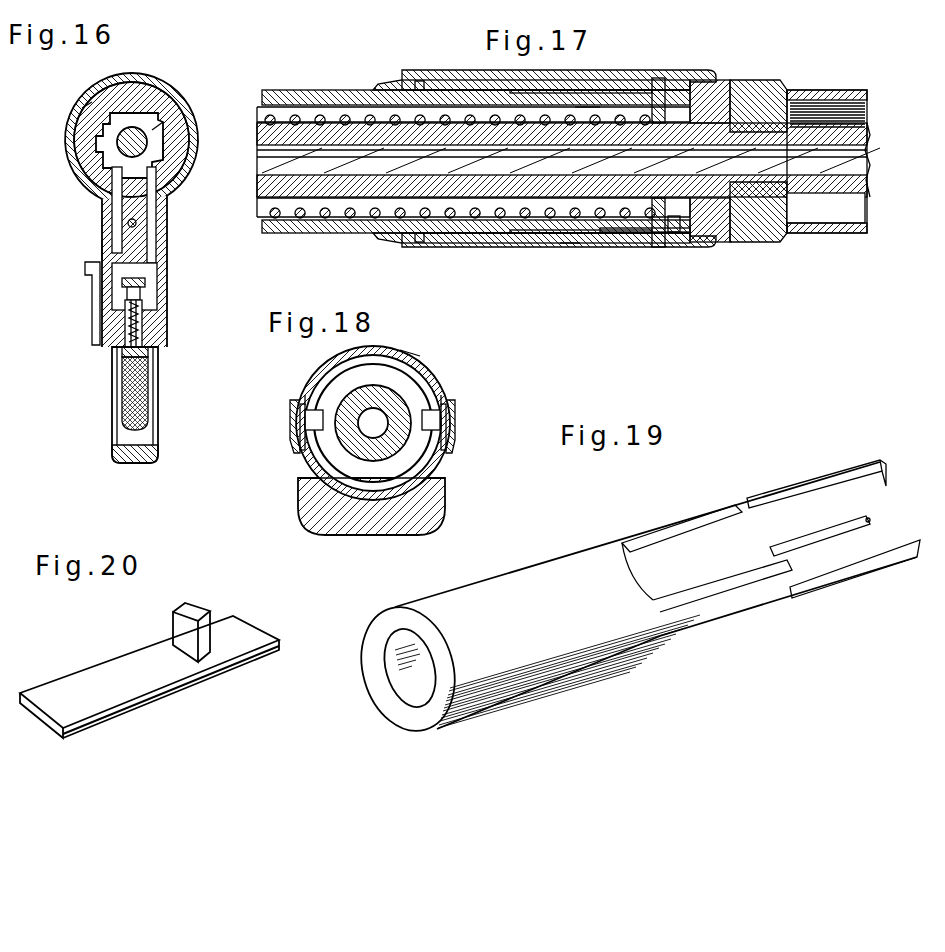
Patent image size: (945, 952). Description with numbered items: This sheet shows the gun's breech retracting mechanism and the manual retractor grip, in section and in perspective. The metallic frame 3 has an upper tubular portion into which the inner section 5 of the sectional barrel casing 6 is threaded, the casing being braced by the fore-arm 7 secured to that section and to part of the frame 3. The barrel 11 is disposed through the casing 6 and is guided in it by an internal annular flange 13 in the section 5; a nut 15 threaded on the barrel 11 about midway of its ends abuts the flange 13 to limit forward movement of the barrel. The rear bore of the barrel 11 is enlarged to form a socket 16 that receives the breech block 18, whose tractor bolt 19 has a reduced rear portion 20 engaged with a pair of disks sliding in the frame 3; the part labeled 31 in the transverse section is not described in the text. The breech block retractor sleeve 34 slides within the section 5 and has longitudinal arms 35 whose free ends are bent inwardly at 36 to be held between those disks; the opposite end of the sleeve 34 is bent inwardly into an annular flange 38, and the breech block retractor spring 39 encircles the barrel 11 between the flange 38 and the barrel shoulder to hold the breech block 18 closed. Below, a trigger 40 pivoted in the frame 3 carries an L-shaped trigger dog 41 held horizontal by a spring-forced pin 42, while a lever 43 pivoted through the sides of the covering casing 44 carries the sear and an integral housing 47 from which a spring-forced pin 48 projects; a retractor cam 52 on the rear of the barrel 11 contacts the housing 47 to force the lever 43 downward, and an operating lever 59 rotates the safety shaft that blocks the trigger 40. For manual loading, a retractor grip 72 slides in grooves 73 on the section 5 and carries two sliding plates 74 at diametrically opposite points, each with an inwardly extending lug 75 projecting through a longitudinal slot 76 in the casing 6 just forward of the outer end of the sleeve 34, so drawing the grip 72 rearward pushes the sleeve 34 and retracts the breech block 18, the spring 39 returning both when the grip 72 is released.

In FIG. 16, the frame 3 is at (160, 140).
In FIG. 17, the inner section of barrel casing 5 is at (300, 90).
In FIG. 18, the inner section of barrel casing 5 is at (430, 379).
In FIG. 17, the barrel casing 6 is at (826, 92).
In FIG. 18, the fore-arm 7 is at (326, 520).
In FIG. 16, the barrel 11 is at (78, 133).
In FIG. 17, the barrel 11 is at (862, 195).
In FIG. 18, the barrel 11 is at (352, 393).
In FIG. 17, the annular flange 13 is at (775, 243).
In FIG. 17, the nut 15 is at (737, 244).
In FIG. 16, the socket 16 is at (183, 148).
In FIG. 17, the socket 16 is at (687, 227).
In FIG. 17, the breech block 18 is at (700, 243).
In FIG. 16, the tractor bolt 19 is at (86, 108).
In FIG. 16, the reduced portion 20 is at (136, 121).
In FIG. 16, the hub pin 31 is at (141, 129).
In FIG. 17, the breech block retractor sleeve 34 is at (568, 238).
In FIG. 19, the breech block retractor sleeve 34 is at (543, 567).
In FIG. 16, the arms 35 is at (112, 76).
In FIG. 17, the arms 35 is at (340, 107).
In FIG. 19, the arms 35 is at (807, 490).
In FIG. 19, the inwardly bent ends 36 is at (903, 538).
In FIG. 17, the annular flange 38 is at (660, 78).
In FIG. 17, the breech block retractor spring 39 is at (580, 108).
In FIG. 16, the trigger 40 is at (158, 397).
In FIG. 16, the trigger dog 41 is at (147, 284).
In FIG. 16, the spring forced pin 42 is at (145, 302).
In FIG. 16, the lever 43 is at (157, 255).
In FIG. 16, the casing 44 is at (170, 216).
In FIG. 16, the housing 47 is at (128, 224).
In FIG. 16, the spring forced pin 48 is at (102, 249).
In FIG. 16, the retractor cam 52 is at (118, 210).
In FIG. 16, the operating lever 59 is at (92, 297).
In FIG. 17, the retractor grip 72 is at (466, 70).
In FIG. 18, the retractor grip 72 is at (418, 354).
In FIG. 18, the grooves 73 is at (300, 462).
In FIG. 17, the sliding plates 74 is at (660, 234).
In FIG. 18, the sliding plates 74 is at (455, 420).
In FIG. 20, the sliding plates 74 is at (248, 633).
In FIG. 17, the lug 75 is at (722, 240).
In FIG. 18, the lug 75 is at (304, 416).
In FIG. 20, the lug 75 is at (181, 613).
In FIG. 17, the longitudinal slots 76 is at (522, 91).
In FIG. 18, the longitudinal slots 76 is at (312, 392).